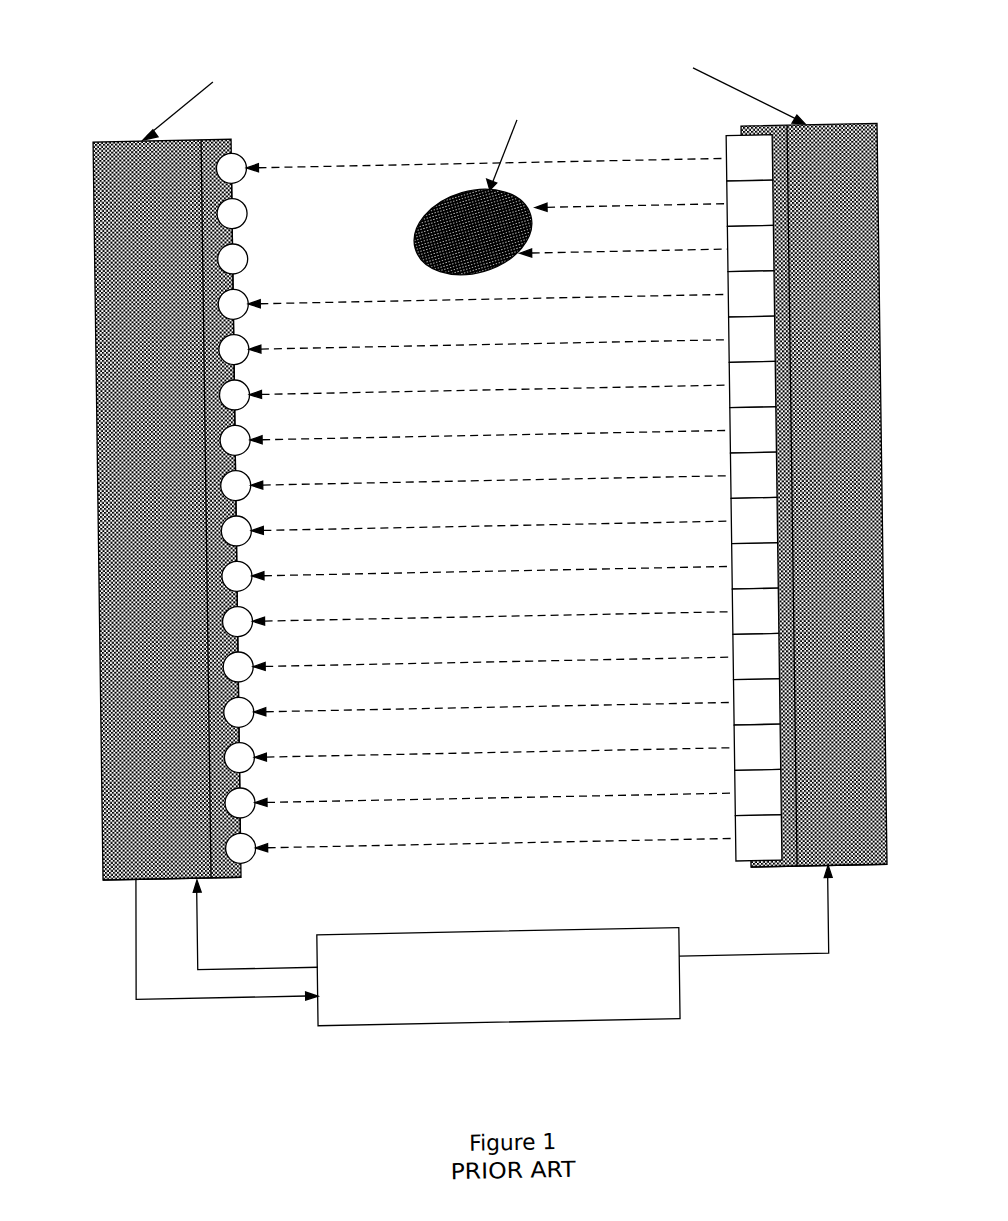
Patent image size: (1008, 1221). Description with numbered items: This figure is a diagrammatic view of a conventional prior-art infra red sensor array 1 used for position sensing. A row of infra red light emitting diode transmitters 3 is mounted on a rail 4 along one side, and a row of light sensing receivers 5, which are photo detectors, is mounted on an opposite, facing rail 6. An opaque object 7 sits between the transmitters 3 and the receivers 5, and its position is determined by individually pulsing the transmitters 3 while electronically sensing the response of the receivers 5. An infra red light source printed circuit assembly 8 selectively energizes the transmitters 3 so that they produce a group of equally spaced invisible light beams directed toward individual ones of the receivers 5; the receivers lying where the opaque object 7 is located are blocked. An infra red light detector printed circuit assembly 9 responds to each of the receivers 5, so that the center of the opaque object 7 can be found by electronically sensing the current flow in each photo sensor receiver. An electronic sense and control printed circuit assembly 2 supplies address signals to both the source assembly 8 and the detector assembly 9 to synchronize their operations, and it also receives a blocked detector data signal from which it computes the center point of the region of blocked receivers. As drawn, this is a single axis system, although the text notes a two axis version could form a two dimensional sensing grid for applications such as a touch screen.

The infra red sensor array 1 is at (481, 569).
The electronic sense and control printed circuit assembly 2 is at (615, 1022).
The infra red light emitting diode transmitters 3 is at (732, 858).
The rail 4 is at (777, 871).
The light sensing receivers 5 is at (253, 850).
The opposite rail 6 is at (222, 874).
The opaque object 7 is at (415, 253).
The infra red light source printed circuit assembly 8 is at (850, 129).
The infra red light detector printed circuit assembly 9 is at (112, 132).